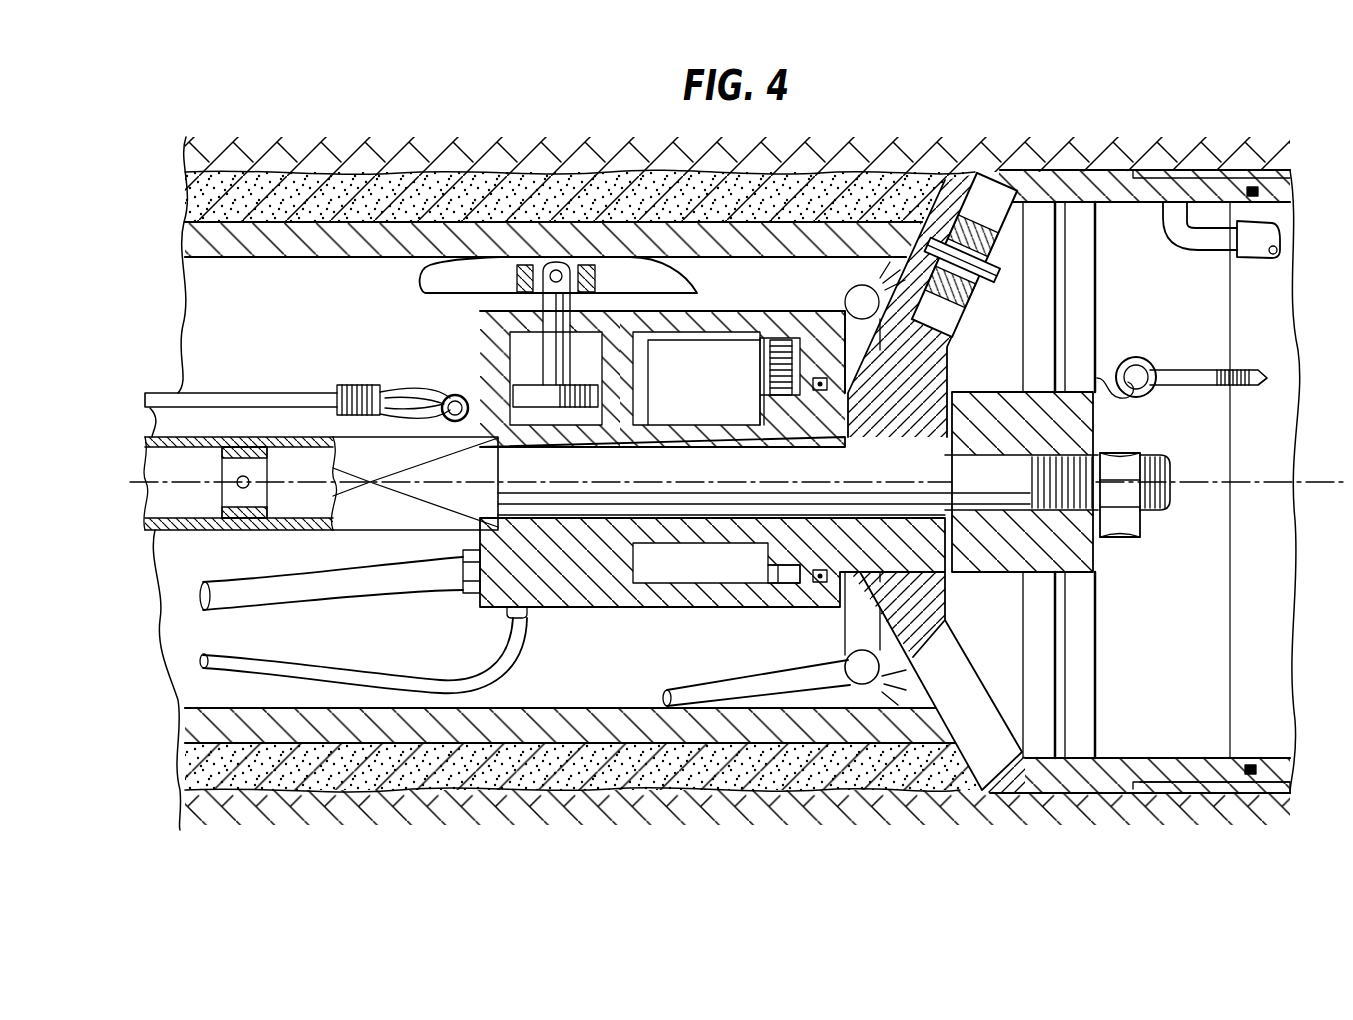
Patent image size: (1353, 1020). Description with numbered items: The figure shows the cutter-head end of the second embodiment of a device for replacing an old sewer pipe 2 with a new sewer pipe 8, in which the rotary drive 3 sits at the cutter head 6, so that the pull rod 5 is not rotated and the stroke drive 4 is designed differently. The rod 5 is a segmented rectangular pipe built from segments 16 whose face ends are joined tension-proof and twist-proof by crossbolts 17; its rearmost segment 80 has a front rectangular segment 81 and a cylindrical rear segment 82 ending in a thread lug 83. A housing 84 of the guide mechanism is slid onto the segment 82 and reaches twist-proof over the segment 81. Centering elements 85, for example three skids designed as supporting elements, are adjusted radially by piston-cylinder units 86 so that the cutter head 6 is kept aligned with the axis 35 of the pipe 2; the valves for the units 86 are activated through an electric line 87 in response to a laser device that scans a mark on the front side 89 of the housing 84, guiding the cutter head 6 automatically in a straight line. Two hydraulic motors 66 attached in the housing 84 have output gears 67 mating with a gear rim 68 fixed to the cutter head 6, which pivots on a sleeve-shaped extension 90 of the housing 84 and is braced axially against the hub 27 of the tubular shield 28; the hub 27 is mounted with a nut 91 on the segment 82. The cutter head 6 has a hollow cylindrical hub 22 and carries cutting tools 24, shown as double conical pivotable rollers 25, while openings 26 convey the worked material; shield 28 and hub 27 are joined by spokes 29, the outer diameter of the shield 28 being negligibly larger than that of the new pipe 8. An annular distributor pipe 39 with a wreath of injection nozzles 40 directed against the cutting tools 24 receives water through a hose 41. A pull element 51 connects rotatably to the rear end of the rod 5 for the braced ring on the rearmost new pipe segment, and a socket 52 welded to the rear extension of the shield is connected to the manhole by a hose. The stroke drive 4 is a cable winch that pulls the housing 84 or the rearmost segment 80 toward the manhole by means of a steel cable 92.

The sewer pipe 2 is at (320, 258).
The rotary drive 3 is at (768, 338).
The stroke drive 4 is at (1246, 775).
The pull rod 5 is at (153, 541).
The cutter head 6 is at (1012, 639).
The new sewer pipe 8 is at (1292, 786).
The segment 16 is at (178, 437).
The crossbolt 17 is at (240, 488).
The hollow cylindrical hub 22 is at (930, 372).
The cutting tool 24 is at (1012, 280).
The pivotable roller 25 is at (978, 280).
The opening 26 is at (980, 707).
The hub 27 is at (1083, 557).
The tubular shield 28 is at (1133, 200).
The spoke 29 is at (1077, 283).
The axis 35 is at (1268, 476).
The annular distributor pipe 39 is at (857, 665).
The injection nozzle 40 is at (875, 684).
The hose 41 is at (688, 693).
The pull element 51 is at (1185, 375).
The socket 52 is at (1195, 240).
The hydraulic motor 66 is at (728, 375).
The output gear 67 is at (786, 352).
The gear rim 68 is at (752, 588).
The rearmost segment 80 is at (363, 455).
The front rectangular segment 81 is at (243, 522).
The cylindrical rear segment 82 is at (597, 508).
The thread lug 83 is at (1172, 490).
The housing 84 is at (672, 590).
The bar 85 is at (428, 287).
The piston-cylinder unit 86 is at (523, 372).
The electric line 87 is at (320, 668).
The front side 89 is at (480, 338).
The sleeve-shaped extension 90 is at (946, 597).
The nut 91 is at (1125, 521).
The steel cable 92 is at (236, 394).